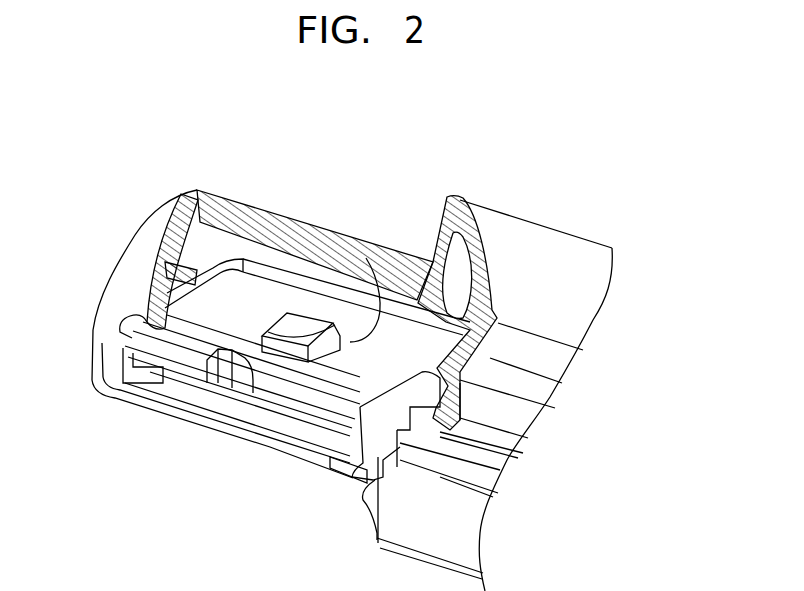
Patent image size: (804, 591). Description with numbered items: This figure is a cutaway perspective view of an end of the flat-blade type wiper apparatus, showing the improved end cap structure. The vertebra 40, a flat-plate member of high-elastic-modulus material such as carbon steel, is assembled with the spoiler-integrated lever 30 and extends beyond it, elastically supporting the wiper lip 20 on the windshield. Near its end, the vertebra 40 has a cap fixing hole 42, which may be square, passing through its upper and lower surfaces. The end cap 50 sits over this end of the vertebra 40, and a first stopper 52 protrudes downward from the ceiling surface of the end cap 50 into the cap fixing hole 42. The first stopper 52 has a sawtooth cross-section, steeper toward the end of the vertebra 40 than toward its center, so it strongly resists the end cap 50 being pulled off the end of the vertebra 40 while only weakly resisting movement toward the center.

The end cap 50 is at (130, 233).
The vertebra 40 is at (248, 283).
The cap fixing hole 42 is at (372, 275).
The first stopper 52 is at (275, 340).
The spoiler-integrated lever 30 is at (448, 196).
The wiper lip 20 is at (377, 533).